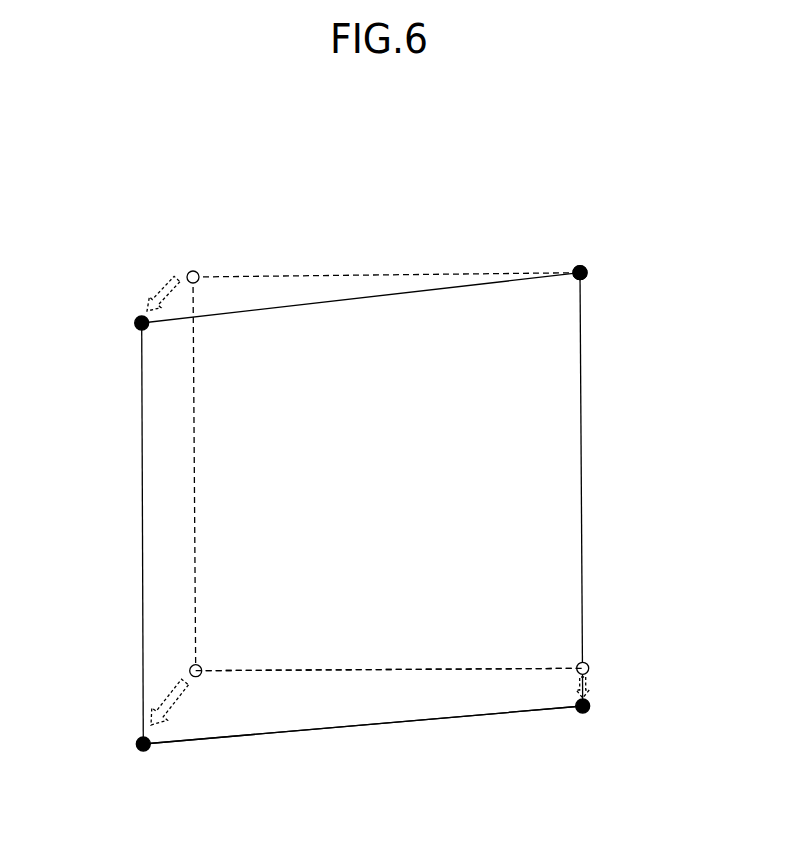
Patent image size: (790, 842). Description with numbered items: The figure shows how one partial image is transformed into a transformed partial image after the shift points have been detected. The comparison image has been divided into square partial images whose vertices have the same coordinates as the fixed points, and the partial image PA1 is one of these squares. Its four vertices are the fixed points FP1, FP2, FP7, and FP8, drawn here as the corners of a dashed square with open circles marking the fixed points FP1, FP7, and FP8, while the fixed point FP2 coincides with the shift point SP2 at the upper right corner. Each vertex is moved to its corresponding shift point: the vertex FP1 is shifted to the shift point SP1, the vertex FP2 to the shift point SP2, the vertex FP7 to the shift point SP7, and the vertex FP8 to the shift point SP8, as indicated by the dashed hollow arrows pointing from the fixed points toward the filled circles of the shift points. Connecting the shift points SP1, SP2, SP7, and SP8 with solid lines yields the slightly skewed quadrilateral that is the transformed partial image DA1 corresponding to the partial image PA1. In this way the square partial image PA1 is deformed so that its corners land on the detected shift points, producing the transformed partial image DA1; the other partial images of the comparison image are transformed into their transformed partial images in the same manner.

The shift point SP1 is at (135, 323).
The shift point SP2 is at (580, 266).
The vertex (fixed point) FP2 is at (580, 273).
The vertex (fixed point) FP1 is at (193, 270).
The vertex (fixed point) FP7 is at (198, 664).
The vertex (fixed point) FP8 is at (585, 662).
The shift point SP7 is at (145, 751).
The shift point SP8 is at (584, 713).
The partial image PA1 is at (330, 718).
The transformed partial image DA1 is at (440, 625).